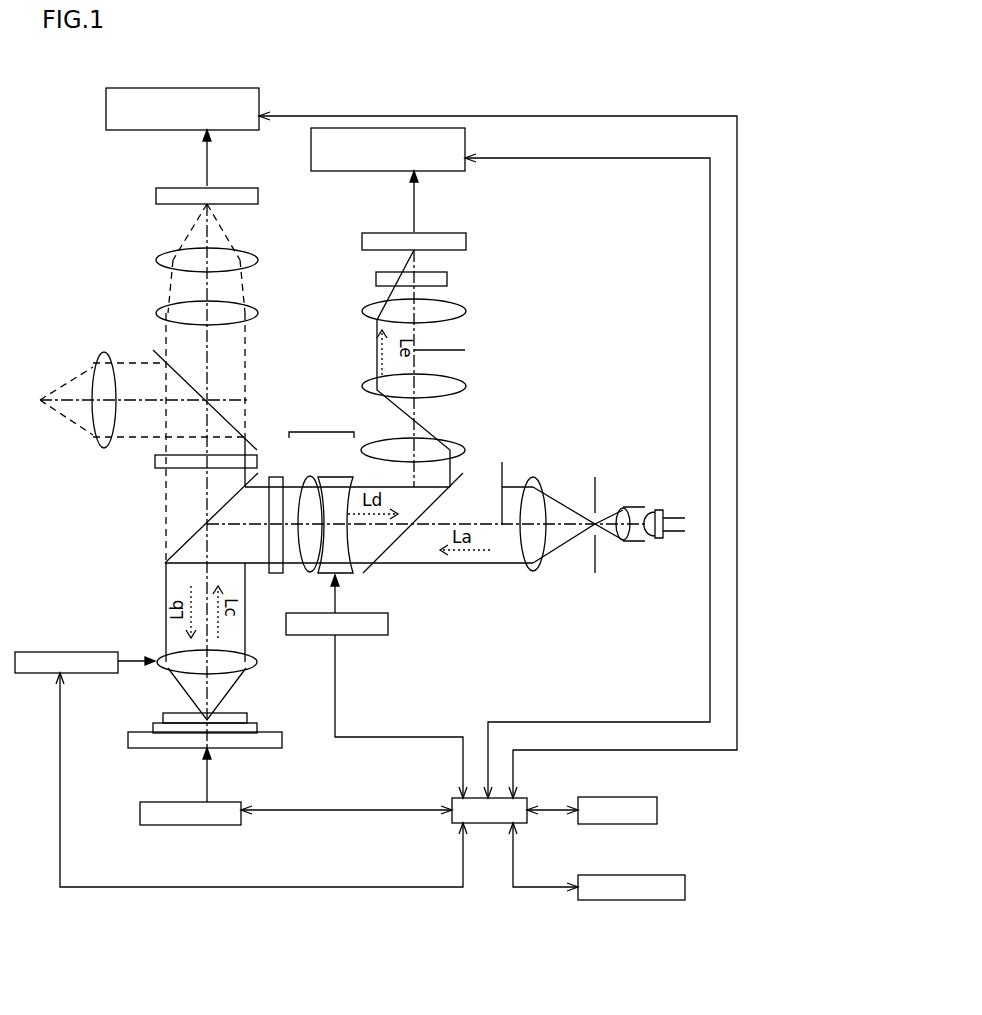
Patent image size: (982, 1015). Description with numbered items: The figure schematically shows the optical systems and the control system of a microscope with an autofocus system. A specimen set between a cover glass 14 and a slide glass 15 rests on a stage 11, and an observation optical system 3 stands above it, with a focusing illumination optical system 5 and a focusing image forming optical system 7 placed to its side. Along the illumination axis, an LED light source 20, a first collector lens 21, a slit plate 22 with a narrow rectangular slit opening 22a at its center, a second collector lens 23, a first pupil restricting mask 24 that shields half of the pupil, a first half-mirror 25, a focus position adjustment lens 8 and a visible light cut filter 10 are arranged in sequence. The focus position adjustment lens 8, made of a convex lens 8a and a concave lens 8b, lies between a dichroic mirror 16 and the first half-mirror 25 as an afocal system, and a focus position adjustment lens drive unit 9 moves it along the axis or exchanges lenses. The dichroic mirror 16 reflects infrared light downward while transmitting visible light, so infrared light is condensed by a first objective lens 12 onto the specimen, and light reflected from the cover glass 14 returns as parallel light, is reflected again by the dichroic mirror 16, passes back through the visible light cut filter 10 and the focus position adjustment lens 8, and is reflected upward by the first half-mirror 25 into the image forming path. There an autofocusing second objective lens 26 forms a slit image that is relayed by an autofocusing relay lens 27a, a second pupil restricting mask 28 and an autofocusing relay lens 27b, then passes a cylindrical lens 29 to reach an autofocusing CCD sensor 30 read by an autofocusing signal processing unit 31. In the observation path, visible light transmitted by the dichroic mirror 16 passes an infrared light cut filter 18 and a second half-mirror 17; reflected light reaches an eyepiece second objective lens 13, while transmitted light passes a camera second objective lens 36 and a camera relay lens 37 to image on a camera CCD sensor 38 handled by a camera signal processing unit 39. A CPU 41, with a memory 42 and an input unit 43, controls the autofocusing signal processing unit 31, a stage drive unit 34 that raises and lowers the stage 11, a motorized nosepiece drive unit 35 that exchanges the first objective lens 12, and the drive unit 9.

The observation optical system 3 is at (86, 524).
The focusing illumination optical system 5 is at (450, 575).
The focusing image forming optical system 7 is at (532, 286).
The focus position adjustment lens 8 is at (321, 422).
The convex lens 8a is at (310, 476).
The concave lens 8b is at (336, 476).
The focus position adjustment lens drive unit 9 is at (388, 626).
The visible light cut filter 10 is at (278, 574).
The stage 11 is at (128, 740).
The first objective lens 12 is at (162, 656).
The eyepiece second objective lens 13 is at (105, 448).
The cover glass 14 is at (164, 713).
The slide glass 15 is at (153, 728).
The dichroic mirror 16 is at (162, 564).
The second half-mirror 17 is at (246, 437).
The infrared light cut filter 18 is at (158, 468).
The LED light source 20 is at (665, 509).
The first collector lens 21 is at (623, 506).
The slit plate 22 is at (595, 474).
The slit opening 22a is at (597, 530).
The second collector lens 23 is at (531, 571).
The first pupil restricting mask 24 is at (502, 478).
The first half-mirror 25 is at (366, 574).
The autofocusing second objective lens 26 is at (458, 446).
The autofocusing relay lens 27a is at (466, 387).
The autofocusing relay lens 27b is at (466, 312).
The second pupil restricting mask 28 is at (465, 350).
The cylindrical lens 29 is at (447, 279).
The autofocusing CCD sensor 30 is at (466, 242).
The autofocusing signal processing unit 31 is at (324, 171).
The stage drive unit 34 is at (195, 825).
The motorized nosepiece drive unit 35 is at (36, 643).
The camera second objective lens 36 is at (156, 314).
The camera relay lens 37 is at (156, 260).
The camera CCD sensor 38 is at (156, 196).
The camera signal processing unit 39 is at (132, 88).
The CPU 41 is at (451, 800).
The memory 42 is at (657, 809).
The input unit 43 is at (692, 872).